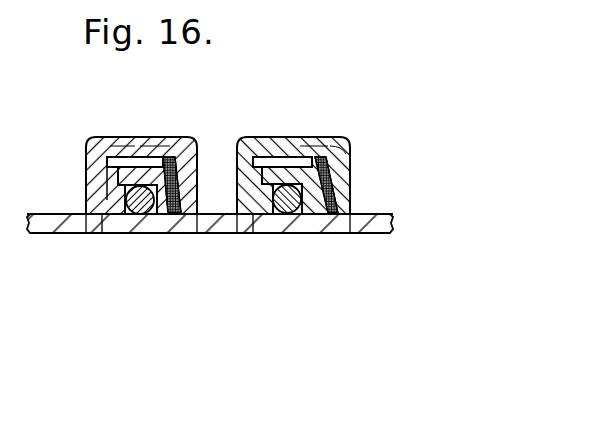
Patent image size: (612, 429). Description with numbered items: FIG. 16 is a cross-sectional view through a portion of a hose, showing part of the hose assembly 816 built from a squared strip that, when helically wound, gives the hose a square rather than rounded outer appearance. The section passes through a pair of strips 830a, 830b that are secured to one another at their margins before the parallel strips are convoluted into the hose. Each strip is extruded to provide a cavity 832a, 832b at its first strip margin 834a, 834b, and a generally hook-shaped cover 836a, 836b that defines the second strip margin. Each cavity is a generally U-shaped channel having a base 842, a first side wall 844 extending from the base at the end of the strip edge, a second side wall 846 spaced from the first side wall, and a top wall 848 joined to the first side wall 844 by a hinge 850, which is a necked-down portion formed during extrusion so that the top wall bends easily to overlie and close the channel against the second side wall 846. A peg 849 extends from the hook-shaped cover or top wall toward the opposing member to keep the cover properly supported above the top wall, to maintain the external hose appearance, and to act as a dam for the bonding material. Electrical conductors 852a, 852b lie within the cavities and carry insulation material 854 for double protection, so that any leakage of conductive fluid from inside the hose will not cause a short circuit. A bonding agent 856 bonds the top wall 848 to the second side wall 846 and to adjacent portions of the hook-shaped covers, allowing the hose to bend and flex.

The hose assembly 816 is at (267, 303).
The strip 830a is at (85, 135).
The strip 830b is at (275, 134).
The cavity 832a is at (325, 233).
The cavity 832b is at (148, 214).
The first strip margin 834a is at (260, 233).
The first strip margin 834b is at (105, 233).
The hook-shaped cover 836a is at (163, 160).
The hook-shaped cover 836b is at (307, 142).
The base 842 is at (172, 233).
The first side wall 844 is at (110, 192).
The second side wall 846 is at (178, 200).
The top wall 848 is at (122, 150).
The peg 849 is at (153, 150).
The hinge 850 is at (89, 150).
The electrical conductor 852a is at (292, 220).
The electrical conductor 852b is at (133, 214).
The insulation material 854 is at (130, 207).
The bonding agent 856 is at (180, 165).